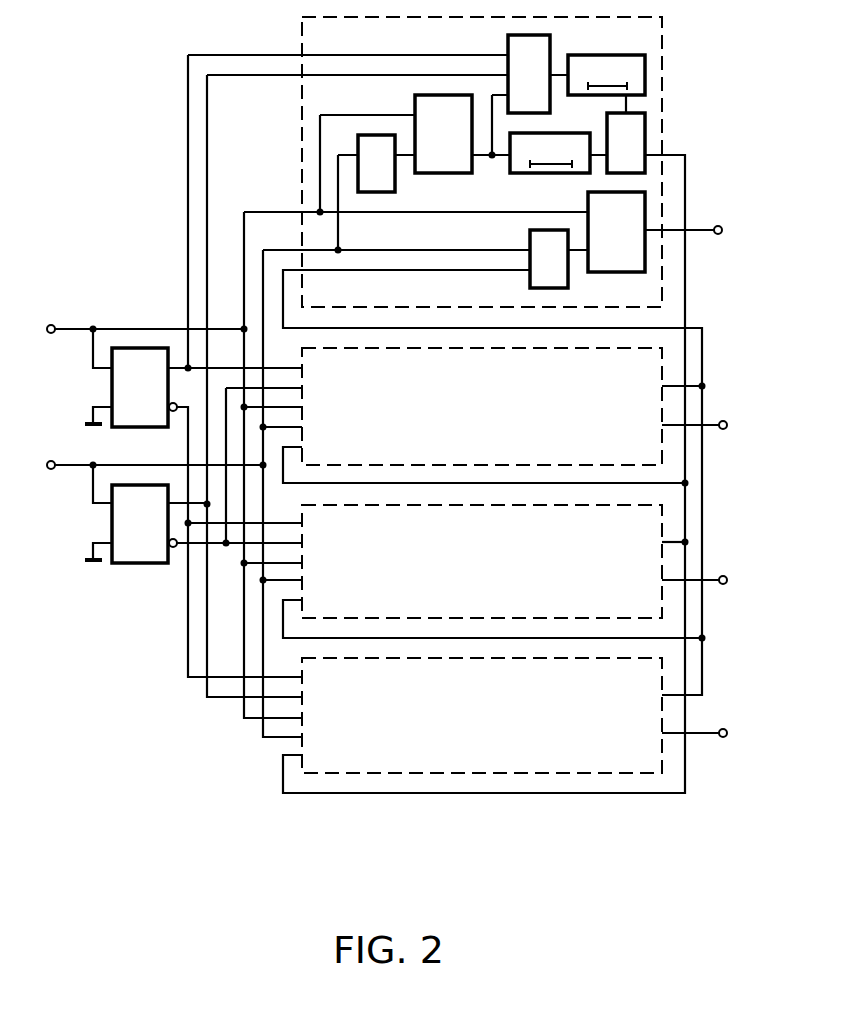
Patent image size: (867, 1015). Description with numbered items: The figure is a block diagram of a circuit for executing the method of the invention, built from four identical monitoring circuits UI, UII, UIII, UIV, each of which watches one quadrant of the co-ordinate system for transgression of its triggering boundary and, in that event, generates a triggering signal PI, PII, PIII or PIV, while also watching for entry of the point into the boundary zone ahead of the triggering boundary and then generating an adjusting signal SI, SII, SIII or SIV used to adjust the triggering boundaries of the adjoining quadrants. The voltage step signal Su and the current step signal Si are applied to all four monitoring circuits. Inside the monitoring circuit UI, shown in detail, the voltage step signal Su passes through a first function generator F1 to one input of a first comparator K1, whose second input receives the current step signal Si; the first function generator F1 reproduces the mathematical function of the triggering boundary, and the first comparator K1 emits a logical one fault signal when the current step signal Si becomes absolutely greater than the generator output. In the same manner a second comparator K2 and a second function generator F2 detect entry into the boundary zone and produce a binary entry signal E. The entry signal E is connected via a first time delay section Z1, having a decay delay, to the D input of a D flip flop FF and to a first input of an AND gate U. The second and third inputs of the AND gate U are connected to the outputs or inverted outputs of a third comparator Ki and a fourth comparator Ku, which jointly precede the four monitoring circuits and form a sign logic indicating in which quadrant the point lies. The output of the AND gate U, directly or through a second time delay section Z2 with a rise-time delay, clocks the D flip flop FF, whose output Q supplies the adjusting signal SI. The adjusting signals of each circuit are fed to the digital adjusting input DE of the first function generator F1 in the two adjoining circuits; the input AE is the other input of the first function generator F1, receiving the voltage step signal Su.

The monitoring circuit UI is at (482, 162).
The AND gate U is at (506, 46).
The second time delay section Z2 is at (593, 56).
The D flip flop FF is at (614, 174).
The first time delay section Z1 is at (560, 178).
The second comparator K2 is at (444, 174).
The second function generator F2 is at (385, 194).
The entry signal E is at (489, 172).
The first function generator F1 is at (545, 290).
The first comparator K1 is at (629, 273).
The input AE is at (522, 249).
The digital adjusting input DE is at (487, 272).
The adjusting signal SI is at (662, 154).
The triggering signal PI is at (697, 234).
The current step signal Si is at (143, 314).
The voltage step signal Su is at (153, 450).
The third comparator Ki is at (153, 432).
The fourth comparator Ku is at (150, 566).
The monitoring circuit UII is at (482, 406).
The adjusting signal SII is at (688, 386).
The triggering signal PII is at (713, 430).
The monitoring circuit UIII is at (482, 561).
The adjusting signal SIII is at (672, 541).
The triggering signal PIII is at (712, 585).
The monitoring circuit UIV is at (482, 715).
The adjusting signal SIV is at (690, 696).
The triggering signal PIV is at (713, 738).